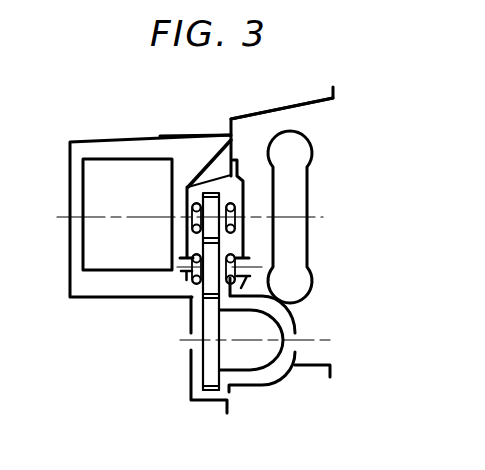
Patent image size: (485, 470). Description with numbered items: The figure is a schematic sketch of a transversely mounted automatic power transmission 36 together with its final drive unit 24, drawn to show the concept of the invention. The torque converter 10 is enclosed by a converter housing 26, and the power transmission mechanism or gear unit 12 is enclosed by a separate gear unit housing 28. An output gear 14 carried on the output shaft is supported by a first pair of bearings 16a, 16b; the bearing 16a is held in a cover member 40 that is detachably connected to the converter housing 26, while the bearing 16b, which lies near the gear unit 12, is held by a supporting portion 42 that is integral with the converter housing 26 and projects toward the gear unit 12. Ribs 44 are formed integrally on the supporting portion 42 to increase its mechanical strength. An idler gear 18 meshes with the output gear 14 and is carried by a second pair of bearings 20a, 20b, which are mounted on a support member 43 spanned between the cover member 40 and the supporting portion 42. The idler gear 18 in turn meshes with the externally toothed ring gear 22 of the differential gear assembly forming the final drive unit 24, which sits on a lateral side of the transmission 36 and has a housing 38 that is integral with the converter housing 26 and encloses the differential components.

The torque converter 10 is at (313, 156).
The gear unit 12 is at (90, 243).
The output gear 14 is at (210, 192).
The first bearing 16a is at (234, 205).
The second bearing 16b is at (188, 186).
The idler gear 18 is at (202, 291).
The fourth bearing 20a is at (244, 285).
The third bearing 20b is at (186, 283).
The ring gear 22 is at (205, 371).
The final drive unit 24 is at (283, 376).
The converter housing 26 is at (290, 107).
The gear unit housing 28 is at (70, 162).
The automatic power transmission 36 is at (170, 127).
The housing 38 is at (249, 381).
The cover member 40 is at (241, 241).
The supporting portion 42 is at (180, 251).
The support member 43 is at (246, 272).
The ribs 44 is at (222, 145).